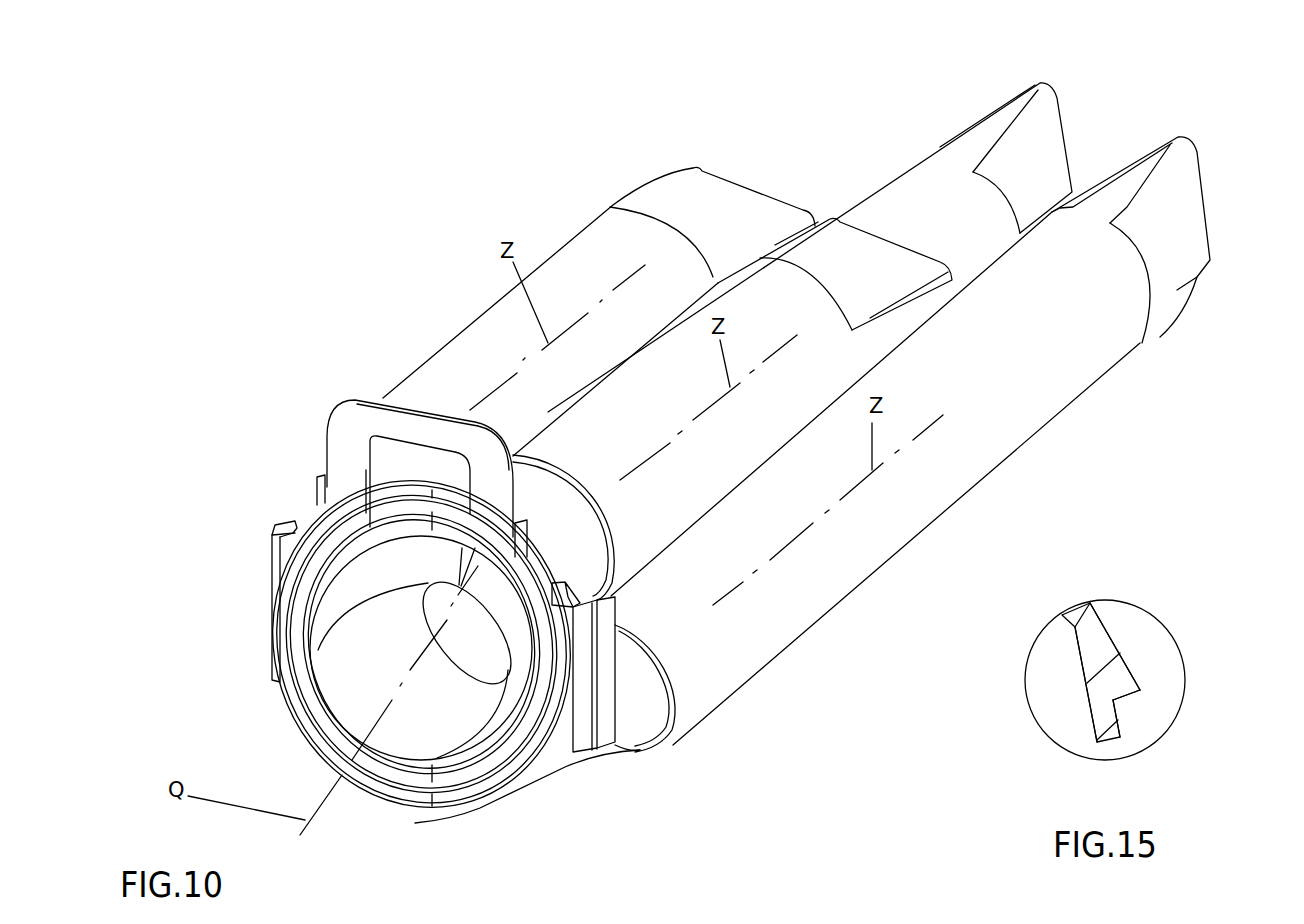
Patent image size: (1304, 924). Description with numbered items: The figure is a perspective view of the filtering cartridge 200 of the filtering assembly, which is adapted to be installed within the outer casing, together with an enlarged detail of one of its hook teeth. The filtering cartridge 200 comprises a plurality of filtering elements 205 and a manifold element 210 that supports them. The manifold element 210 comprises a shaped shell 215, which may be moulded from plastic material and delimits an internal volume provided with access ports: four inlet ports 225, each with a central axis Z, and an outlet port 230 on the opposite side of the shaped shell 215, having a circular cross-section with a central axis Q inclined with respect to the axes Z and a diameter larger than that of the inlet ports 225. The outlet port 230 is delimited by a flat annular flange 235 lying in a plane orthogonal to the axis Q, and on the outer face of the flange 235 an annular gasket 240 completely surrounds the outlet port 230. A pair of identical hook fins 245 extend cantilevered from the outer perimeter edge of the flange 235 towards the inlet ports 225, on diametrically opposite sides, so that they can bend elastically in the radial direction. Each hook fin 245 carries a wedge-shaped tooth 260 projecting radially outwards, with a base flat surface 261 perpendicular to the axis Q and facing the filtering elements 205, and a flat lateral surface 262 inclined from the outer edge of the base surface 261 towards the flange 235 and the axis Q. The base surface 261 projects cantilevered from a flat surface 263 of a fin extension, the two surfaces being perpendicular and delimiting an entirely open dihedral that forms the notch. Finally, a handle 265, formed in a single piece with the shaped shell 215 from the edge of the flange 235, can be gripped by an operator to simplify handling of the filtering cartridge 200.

In FIG. 10, the filtering cartridge 200 is at (368, 290).
In FIG. 10, the filtering elements 205 is at (573, 267).
In FIG. 10, the manifold element 210 is at (580, 775).
In FIG. 10, the shaped shell 215 is at (618, 752).
In FIG. 10, the inlet ports 225 is at (560, 520).
In FIG. 10, the outlet port 230 is at (318, 675).
In FIG. 10, the flat annular flange 235 is at (295, 600).
In FIG. 10, the annular gasket 240 is at (310, 537).
In FIG. 10, the hook fins 245 is at (270, 568).
In FIG. 15, the hook fins 245 is at (1103, 715).
In FIG. 10, the tooth 260 is at (274, 524).
In FIG. 15, the tooth 260 is at (1118, 672).
In FIG. 15, the base flat surface 261 is at (1132, 700).
In FIG. 15, the flat lateral surface 262 is at (1137, 675).
In FIG. 15, the flat surface 263 is at (1123, 737).
In FIG. 10, the handle 265 is at (372, 418).